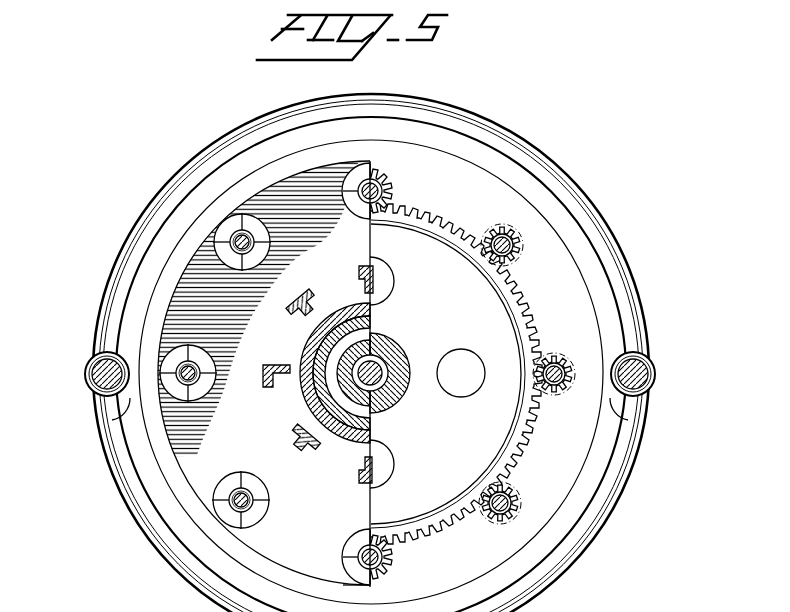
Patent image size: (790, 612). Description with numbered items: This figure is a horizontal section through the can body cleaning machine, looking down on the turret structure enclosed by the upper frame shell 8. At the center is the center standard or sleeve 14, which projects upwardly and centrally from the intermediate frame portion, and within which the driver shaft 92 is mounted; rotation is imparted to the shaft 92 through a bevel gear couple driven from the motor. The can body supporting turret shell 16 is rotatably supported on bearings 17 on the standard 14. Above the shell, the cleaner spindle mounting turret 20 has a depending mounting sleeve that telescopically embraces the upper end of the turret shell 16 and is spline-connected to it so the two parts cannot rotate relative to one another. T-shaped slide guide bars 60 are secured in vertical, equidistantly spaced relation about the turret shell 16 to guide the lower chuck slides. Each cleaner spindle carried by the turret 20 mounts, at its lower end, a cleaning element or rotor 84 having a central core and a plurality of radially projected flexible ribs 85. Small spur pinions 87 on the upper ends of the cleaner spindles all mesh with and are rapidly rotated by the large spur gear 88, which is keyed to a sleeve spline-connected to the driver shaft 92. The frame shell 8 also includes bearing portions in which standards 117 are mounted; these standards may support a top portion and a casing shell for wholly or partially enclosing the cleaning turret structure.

The upper frame shell 8 is at (91, 362).
The standards 117 is at (95, 388).
The center standard or sleeve 14 is at (364, 333).
The can body supporting turret shell 16 is at (373, 420).
The bearings 17 is at (320, 398).
The cleaner spindle mounting turret 20 is at (342, 304).
The T-shaped slide guide bars 60 is at (292, 317).
The cleaning element or rotor 84 is at (206, 393).
The radially projected flexible ribs 85 is at (226, 232).
The pinion 87 is at (500, 263).
The large spur gear 88 is at (435, 253).
The driver shaft 92 is at (381, 368).